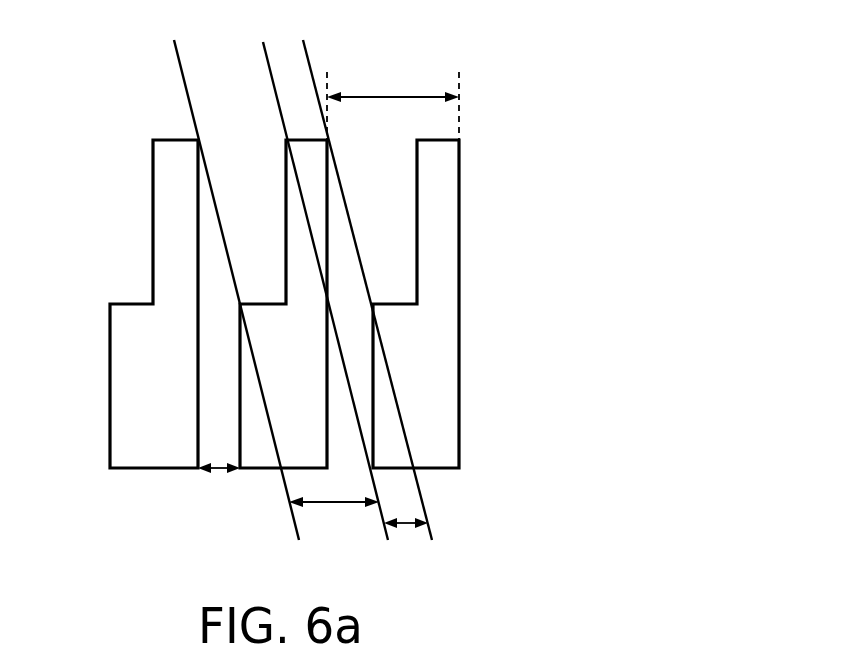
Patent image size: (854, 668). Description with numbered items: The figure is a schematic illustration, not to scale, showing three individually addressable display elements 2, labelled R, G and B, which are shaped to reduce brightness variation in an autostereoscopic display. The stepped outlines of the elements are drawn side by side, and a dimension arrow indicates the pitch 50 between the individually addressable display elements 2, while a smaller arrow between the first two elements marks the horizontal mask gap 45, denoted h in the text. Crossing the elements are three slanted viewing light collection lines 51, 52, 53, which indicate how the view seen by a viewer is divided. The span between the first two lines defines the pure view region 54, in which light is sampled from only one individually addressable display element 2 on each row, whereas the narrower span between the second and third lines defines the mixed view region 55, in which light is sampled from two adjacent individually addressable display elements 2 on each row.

The individually addressable display element 2 is at (110, 386).
The horizontal mask gap 45 is at (213, 470).
The pitch 50 is at (396, 96).
The viewing light collection line 51 is at (178, 57).
The viewing light collection line 52 is at (266, 57).
The viewing light collection line 53 is at (307, 52).
The pure view region 54 is at (325, 503).
The mixed view region 55 is at (401, 524).